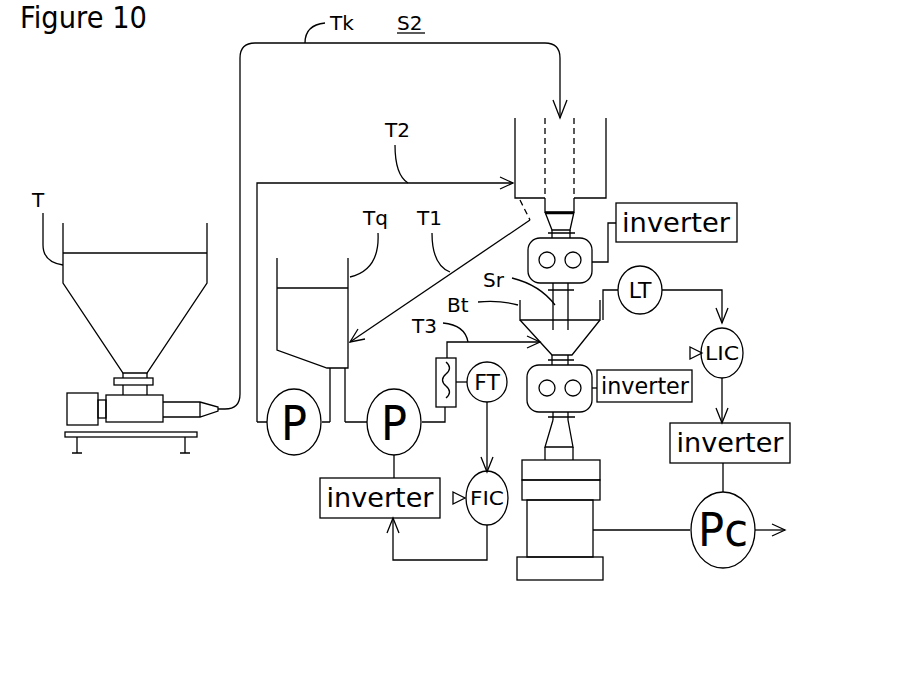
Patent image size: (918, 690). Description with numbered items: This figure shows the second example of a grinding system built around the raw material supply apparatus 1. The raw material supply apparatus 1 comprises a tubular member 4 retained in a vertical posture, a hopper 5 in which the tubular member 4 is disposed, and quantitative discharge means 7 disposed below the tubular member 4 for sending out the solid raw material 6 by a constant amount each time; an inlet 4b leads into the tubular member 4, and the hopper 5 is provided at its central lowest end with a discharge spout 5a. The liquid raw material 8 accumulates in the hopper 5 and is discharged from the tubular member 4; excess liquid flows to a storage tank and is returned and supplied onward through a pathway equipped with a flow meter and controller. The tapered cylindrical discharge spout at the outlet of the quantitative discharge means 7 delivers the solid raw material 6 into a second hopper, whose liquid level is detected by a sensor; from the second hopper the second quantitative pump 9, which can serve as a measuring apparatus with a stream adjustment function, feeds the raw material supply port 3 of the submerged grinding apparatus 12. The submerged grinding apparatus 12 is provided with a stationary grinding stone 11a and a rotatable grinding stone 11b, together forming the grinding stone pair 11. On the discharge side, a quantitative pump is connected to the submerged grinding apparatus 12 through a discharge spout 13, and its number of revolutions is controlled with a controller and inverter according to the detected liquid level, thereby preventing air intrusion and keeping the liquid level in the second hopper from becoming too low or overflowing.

The raw material supply apparatus 1 is at (582, 137).
The raw material supply port 3 is at (575, 455).
The tubular member 4 is at (576, 148).
The inlet of inner cylinder 4b is at (568, 127).
The hopper 5 is at (607, 133).
The discharge spout 5a is at (587, 214).
The solid raw material 6 is at (154, 268).
The quantitative discharge means 7 is at (630, 262).
The liquid raw material 8 is at (117, 270).
The second quantitative pump 9 is at (580, 367).
The nozzle unit 11 is at (607, 485).
The stationary grinding stone 11a is at (602, 472).
The rotatable grinding stone 11b is at (602, 489).
The submerged grinding apparatus 12 is at (562, 525).
The discharge spout 13 is at (630, 530).